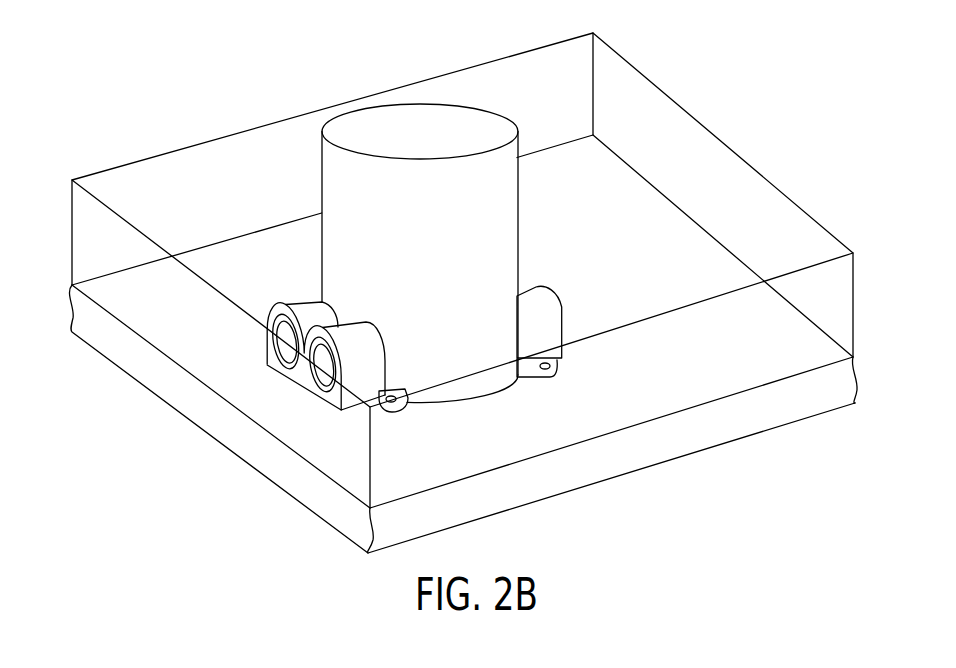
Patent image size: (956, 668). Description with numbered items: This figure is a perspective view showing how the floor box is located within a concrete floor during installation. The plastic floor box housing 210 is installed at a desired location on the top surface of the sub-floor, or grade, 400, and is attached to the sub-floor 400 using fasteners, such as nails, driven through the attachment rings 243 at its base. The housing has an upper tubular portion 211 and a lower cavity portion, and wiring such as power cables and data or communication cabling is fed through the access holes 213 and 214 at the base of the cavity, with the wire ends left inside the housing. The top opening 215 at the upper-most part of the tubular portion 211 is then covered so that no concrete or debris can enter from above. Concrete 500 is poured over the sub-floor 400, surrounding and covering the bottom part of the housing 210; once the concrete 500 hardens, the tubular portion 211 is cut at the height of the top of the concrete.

The concrete 500 is at (702, 143).
The sub-floor 400 is at (600, 463).
The floor box housing 210 is at (430, 229).
The upper tubular portion 211 is at (342, 190).
The top opening 215 is at (392, 130).
The access hole 213 is at (397, 330).
The access hole 214 is at (312, 383).
The attachment ring 243 is at (394, 413).